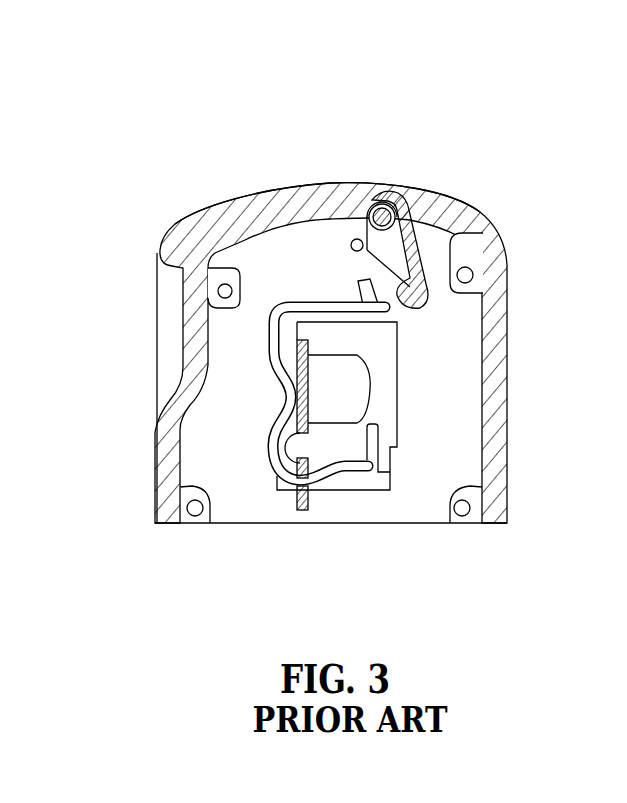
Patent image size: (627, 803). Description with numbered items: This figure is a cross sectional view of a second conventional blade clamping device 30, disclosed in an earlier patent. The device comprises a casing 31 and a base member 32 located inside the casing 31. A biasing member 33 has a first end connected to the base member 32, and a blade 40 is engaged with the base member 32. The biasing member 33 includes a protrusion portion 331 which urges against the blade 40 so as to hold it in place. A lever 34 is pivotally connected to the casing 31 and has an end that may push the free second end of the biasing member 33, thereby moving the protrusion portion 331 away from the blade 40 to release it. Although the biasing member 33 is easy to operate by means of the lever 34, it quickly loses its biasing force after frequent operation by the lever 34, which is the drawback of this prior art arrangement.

The blade clamping device 30 is at (342, 357).
The casing 31 is at (348, 317).
The base member 32 is at (392, 347).
The biasing member 33 is at (262, 470).
The protrusion portion 331 is at (300, 375).
The lever 34 is at (333, 183).
The blade 40 is at (308, 396).